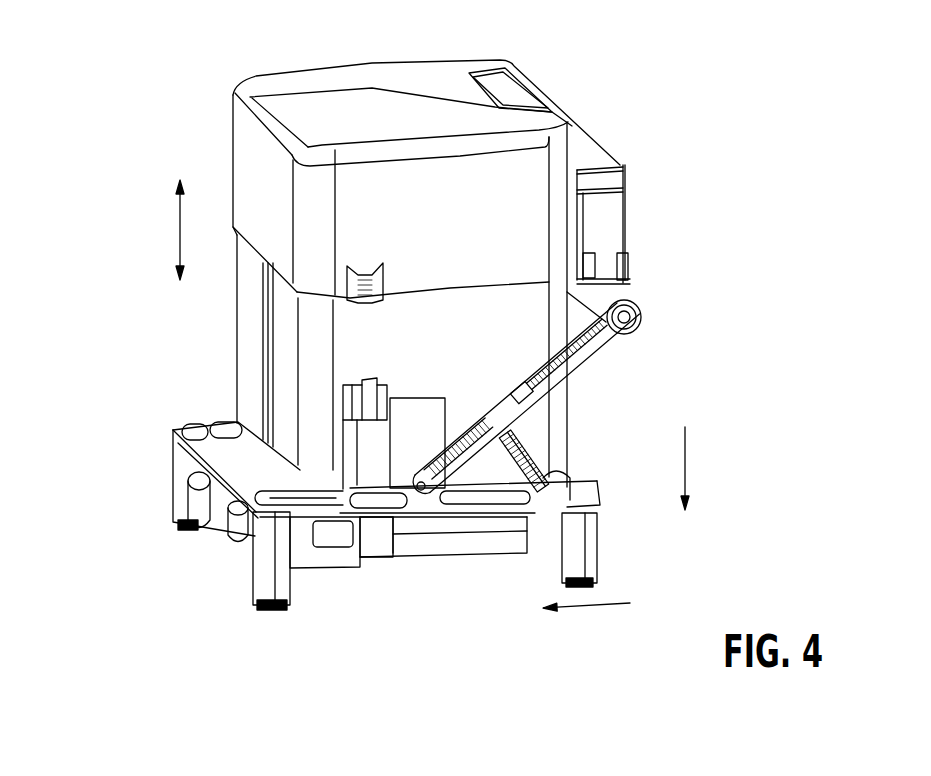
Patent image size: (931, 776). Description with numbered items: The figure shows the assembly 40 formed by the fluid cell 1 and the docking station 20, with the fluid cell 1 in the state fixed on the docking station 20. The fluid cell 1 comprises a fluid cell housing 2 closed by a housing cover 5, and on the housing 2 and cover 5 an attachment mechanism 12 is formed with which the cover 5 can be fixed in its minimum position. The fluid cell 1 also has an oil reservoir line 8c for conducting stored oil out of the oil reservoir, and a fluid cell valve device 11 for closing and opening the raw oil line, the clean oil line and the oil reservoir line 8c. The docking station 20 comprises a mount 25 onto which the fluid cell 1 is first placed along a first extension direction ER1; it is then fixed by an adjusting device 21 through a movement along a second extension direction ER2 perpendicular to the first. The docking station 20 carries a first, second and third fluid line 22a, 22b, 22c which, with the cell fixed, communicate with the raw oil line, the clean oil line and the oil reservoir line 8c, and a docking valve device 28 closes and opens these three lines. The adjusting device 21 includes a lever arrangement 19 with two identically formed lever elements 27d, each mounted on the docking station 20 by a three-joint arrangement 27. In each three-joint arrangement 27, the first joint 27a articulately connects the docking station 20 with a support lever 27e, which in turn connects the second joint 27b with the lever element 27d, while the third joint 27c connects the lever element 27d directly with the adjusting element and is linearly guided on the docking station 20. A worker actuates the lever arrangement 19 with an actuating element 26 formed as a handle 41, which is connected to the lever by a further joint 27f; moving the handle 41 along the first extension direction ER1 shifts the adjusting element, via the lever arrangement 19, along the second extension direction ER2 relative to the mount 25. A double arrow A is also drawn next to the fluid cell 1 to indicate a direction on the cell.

The fluid cell 1 is at (473, 265).
The fluid cell housing 2 is at (468, 342).
The housing cover 5 is at (474, 225).
The oil reservoir line 8c is at (410, 540).
The fluid cell valve device 11 is at (488, 551).
The attachment mechanism 12 is at (385, 282).
The lever arrangement 19 is at (696, 264).
The docking station 20 is at (320, 538).
The adjusting device 21 is at (340, 592).
The first fluid line 22a is at (190, 497).
The second fluid line 22b is at (210, 527).
The third fluid line 22c is at (240, 553).
The mount 25 is at (176, 450).
The actuating element 26 is at (587, 148).
The three-joint arrangement 27 is at (488, 445).
The first joint 27a is at (577, 497).
The second joint 27b is at (494, 426).
The third joint 27c is at (423, 500).
The lever element 27d is at (522, 382).
The support lever 27e is at (535, 448).
The further joint 27f is at (643, 318).
The docking valve device 28 is at (380, 562).
The assembly 40 is at (702, 163).
The handle 41 is at (613, 183).
The direction A is at (178, 229).
The first extension direction ER1 is at (688, 462).
The second extension direction ER2 is at (593, 608).